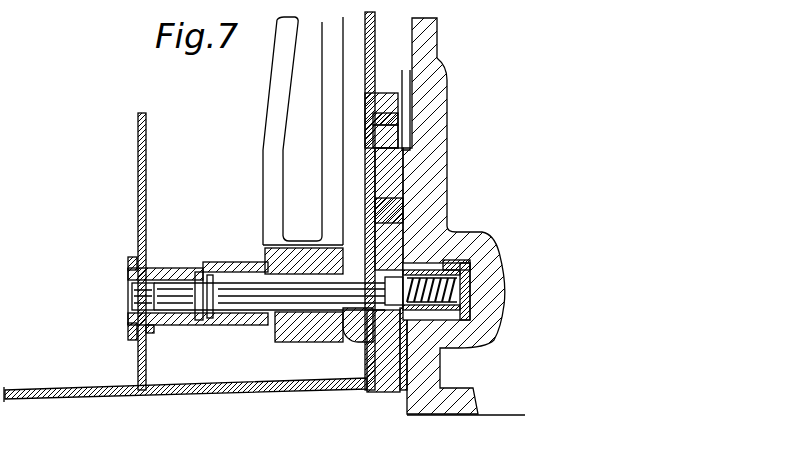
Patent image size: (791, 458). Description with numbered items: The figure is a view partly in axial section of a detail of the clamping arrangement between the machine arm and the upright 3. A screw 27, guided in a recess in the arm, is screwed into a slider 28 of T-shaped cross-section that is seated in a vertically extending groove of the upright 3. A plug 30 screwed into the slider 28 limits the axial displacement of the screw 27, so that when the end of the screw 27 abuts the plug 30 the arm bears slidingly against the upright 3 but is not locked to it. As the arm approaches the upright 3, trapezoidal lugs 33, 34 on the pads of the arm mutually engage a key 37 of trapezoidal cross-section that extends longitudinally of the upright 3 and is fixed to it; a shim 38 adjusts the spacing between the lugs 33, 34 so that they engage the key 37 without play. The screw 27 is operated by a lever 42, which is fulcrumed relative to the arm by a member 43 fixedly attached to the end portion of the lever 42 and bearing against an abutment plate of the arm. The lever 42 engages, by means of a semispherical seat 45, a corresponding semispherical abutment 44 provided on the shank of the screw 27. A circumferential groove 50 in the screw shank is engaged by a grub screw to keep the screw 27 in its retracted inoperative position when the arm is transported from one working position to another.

The upright 3 is at (432, 372).
The screw 27 is at (308, 318).
The slider 28 is at (470, 265).
The plug 30 is at (470, 291).
The trapezoidal lug 33 is at (405, 125).
The trapezoidal lug 34 is at (405, 208).
The key 37 is at (400, 178).
The shim 38 is at (398, 108).
The lever 42 is at (268, 178).
The member 43 is at (352, 330).
The semispherical abutment 44 is at (265, 322).
The semispherical seat 45 is at (278, 320).
The circumferential groove 50 is at (230, 262).